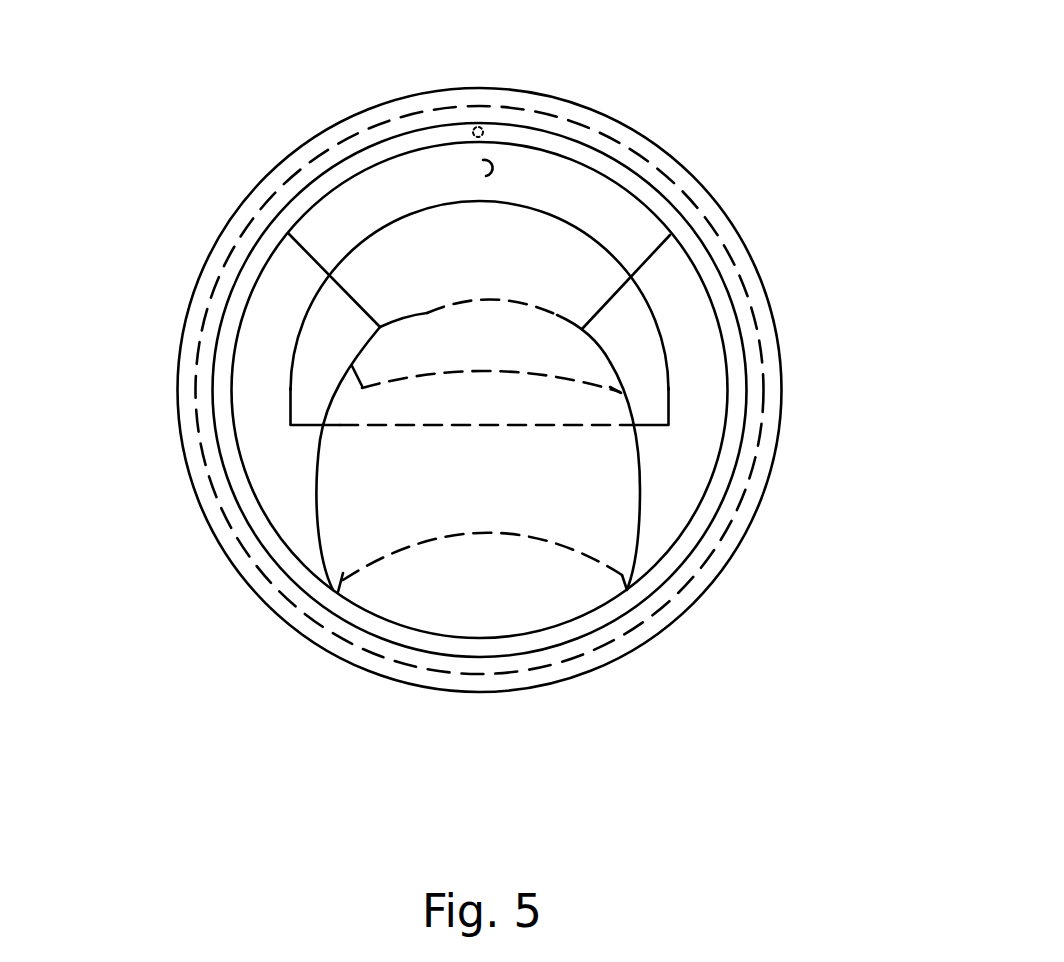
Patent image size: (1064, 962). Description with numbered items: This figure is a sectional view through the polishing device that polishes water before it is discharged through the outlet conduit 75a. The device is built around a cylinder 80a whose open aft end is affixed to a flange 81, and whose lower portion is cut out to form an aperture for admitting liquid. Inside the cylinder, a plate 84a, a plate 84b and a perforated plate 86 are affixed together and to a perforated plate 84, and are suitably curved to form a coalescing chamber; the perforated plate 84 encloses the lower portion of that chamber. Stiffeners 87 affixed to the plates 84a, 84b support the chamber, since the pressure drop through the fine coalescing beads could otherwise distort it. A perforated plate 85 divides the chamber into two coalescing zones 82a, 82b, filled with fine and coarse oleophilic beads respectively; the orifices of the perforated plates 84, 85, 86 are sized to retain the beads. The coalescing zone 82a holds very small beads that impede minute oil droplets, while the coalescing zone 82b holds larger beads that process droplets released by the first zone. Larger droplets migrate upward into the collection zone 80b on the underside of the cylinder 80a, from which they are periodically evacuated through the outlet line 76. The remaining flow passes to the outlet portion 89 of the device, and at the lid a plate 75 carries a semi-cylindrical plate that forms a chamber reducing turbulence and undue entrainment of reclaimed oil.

The plate 75 is at (575, 352).
The outlet conduit 75a is at (488, 177).
The outlet line 76 is at (481, 127).
The cylinder 80a is at (690, 257).
The collection zone 80b is at (508, 245).
The flange 81 is at (638, 187).
The coalescing zone 82a is at (336, 512).
The coalescing zone 82b is at (665, 377).
The perforated plate 84 is at (560, 540).
The plate 84a is at (313, 469).
The plate 84b is at (643, 487).
The perforated plate 85 is at (362, 386).
The perforated plate 86 is at (397, 223).
The stiffeners 87 is at (312, 258).
The outlet portion 89 is at (707, 388).